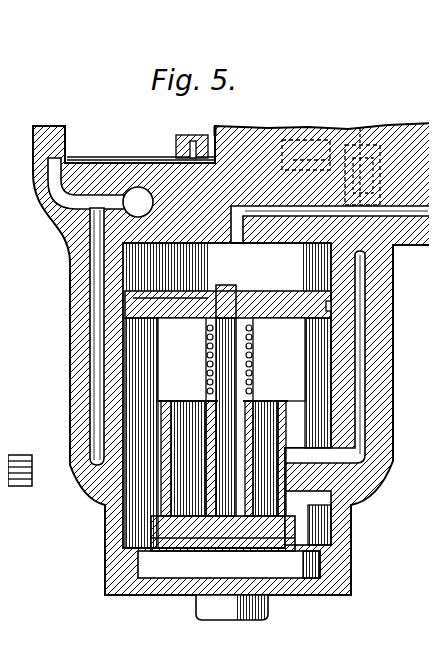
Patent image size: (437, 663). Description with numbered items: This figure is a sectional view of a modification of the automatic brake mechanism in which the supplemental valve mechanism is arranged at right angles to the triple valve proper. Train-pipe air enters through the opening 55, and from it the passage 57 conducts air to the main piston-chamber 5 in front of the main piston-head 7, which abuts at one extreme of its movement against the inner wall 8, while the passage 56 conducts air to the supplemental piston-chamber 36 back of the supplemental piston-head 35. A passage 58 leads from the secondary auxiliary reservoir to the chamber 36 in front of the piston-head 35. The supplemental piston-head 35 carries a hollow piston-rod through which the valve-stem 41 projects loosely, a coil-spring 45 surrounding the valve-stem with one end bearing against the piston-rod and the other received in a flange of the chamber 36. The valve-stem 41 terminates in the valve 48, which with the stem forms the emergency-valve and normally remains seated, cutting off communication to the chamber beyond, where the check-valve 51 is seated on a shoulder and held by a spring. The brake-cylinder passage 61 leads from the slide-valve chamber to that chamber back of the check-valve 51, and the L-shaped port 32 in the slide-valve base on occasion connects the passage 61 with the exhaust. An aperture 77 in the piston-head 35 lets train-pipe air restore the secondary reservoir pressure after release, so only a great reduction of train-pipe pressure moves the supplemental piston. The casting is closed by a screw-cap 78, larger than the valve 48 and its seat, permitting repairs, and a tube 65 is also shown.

The cylindrical chamber 5 is at (140, 146).
The main piston-head 7 is at (186, 132).
The inner wall 8 is at (210, 125).
The L-shaped groove or port 32 is at (324, 306).
The supplemental piston-head 35 is at (279, 359).
The supplemental piston-chamber 36 is at (182, 359).
The valve-stem 41 is at (226, 388).
The coil-spring 45 is at (238, 350).
The valve 48 is at (229, 564).
The check-valve 51 is at (352, 135).
The opening 55 is at (134, 195).
The passage 56 is at (63, 344).
The passage 57 is at (42, 168).
The passage 58 is at (410, 209).
The brake-cylinder passage 61 is at (290, 148).
The tube 65 is at (280, 508).
The aperture 77 is at (166, 308).
The screw-cap 78 is at (309, 588).